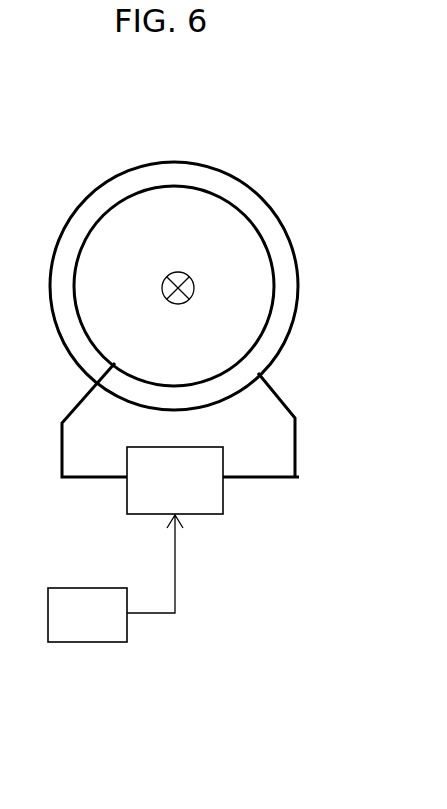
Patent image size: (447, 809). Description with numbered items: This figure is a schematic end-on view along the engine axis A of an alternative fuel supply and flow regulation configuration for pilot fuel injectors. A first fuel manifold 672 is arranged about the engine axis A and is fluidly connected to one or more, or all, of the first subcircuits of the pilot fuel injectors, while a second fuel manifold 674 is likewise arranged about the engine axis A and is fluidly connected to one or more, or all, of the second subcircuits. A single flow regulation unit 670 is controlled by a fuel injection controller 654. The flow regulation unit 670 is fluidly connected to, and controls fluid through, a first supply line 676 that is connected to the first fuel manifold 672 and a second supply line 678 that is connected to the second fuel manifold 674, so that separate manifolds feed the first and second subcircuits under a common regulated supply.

The fuel injection controller 654 is at (115, 578).
The flow regulation unit 670 is at (175, 480).
The first fuel manifold 672 is at (127, 202).
The second fuel manifold 674 is at (247, 183).
The first supply line 676 is at (90, 478).
The second supply line 678 is at (263, 478).
The engine axis A is at (187, 295).